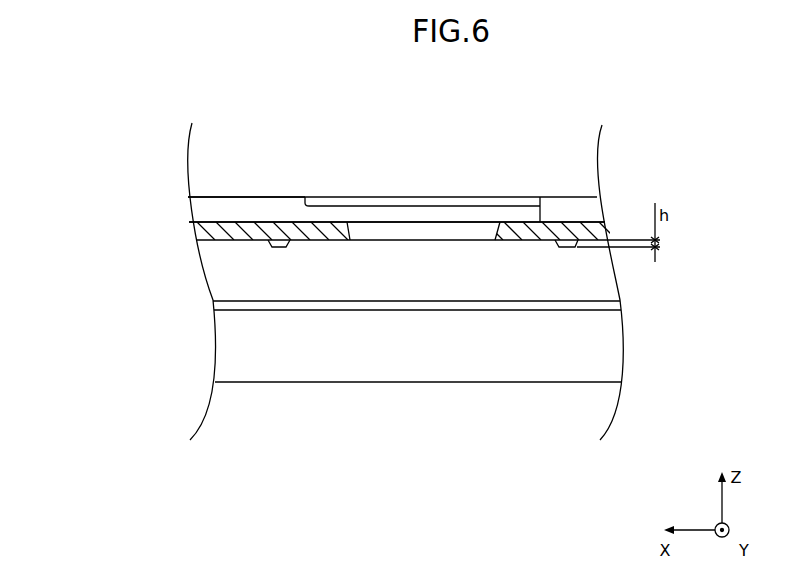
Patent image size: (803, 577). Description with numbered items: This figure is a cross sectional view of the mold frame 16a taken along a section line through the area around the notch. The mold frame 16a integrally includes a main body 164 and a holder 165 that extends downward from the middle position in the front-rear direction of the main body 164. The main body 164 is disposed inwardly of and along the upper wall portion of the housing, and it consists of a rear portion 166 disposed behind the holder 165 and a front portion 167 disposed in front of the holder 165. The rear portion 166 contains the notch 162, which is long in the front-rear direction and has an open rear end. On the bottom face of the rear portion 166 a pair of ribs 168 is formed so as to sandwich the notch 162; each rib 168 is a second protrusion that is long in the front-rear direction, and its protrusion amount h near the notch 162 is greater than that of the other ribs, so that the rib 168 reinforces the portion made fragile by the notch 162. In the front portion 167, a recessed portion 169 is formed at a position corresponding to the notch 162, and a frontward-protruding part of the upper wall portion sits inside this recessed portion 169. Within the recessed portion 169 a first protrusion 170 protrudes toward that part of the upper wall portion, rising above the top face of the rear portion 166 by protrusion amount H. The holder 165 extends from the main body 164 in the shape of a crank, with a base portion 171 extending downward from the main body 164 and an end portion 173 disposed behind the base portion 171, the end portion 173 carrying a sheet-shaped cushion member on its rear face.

The mold frame 16a is at (286, 152).
The notch 162 is at (356, 194).
The main body 164 is at (84, 203).
The holder 165 is at (127, 307).
The rear portion 166 is at (200, 228).
The front portion 167 is at (190, 200).
The rib 168 is at (268, 244).
The recessed portion 169 is at (533, 197).
The first protrusion 170 is at (436, 207).
The base portion 171 is at (225, 274).
The end portion 173 is at (250, 332).